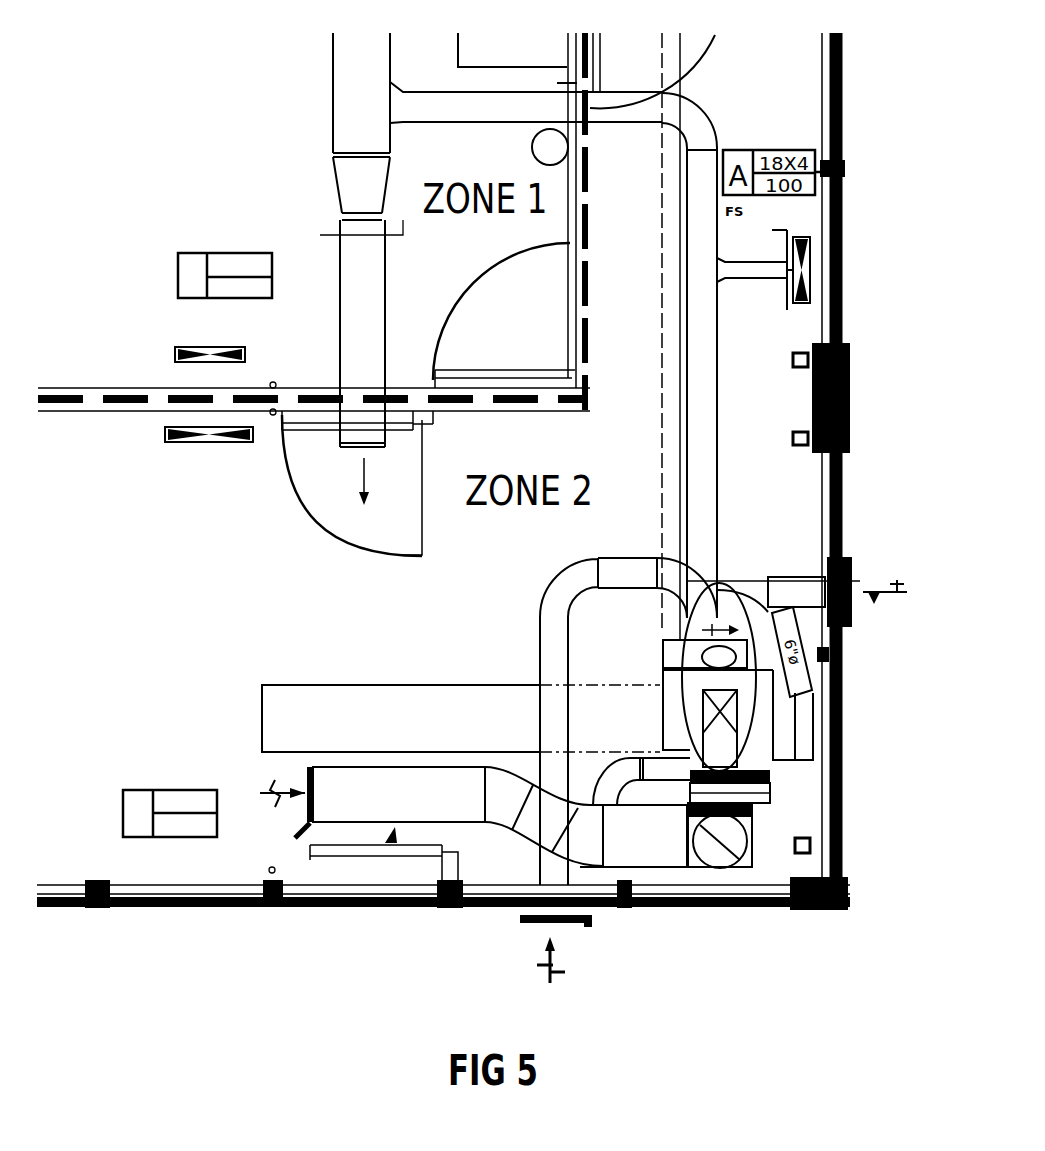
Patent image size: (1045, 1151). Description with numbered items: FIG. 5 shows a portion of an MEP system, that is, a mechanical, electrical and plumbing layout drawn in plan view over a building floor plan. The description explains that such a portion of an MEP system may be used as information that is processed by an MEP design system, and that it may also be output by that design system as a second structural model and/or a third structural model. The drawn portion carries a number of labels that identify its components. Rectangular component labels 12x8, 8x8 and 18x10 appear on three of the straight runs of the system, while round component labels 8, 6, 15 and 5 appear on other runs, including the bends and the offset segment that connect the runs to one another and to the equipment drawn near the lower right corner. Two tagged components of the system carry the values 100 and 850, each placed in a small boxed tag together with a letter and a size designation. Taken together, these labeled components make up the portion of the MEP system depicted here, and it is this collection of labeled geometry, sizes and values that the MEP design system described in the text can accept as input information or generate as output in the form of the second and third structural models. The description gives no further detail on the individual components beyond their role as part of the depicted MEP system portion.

The 12x8 supply duct riser 12x8 is at (361, 269).
The 8x8 branch duct 8x8 is at (526, 102).
The 100 CFM diffuser (type A 18X4) 100 is at (218, 347).
The 8 inch round duct 8 is at (682, 489).
The 6 inch round branch duct with damper 6 is at (763, 270).
The 18x10 main duct 18x10 is at (310, 857).
The 15 inch round duct 15 is at (500, 812).
The 5 inch round duct offset 5 is at (544, 816).
The 850 CFM return grille (type D 24X24) 850 is at (170, 825).